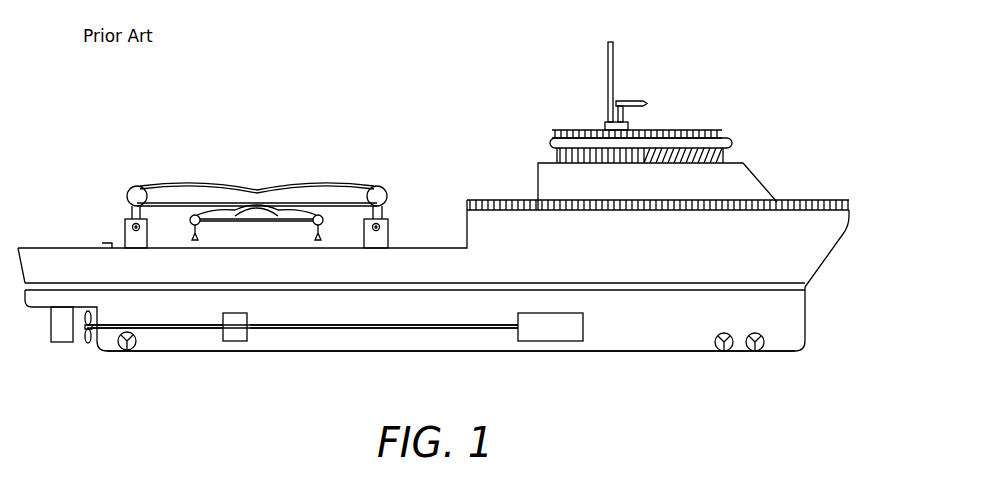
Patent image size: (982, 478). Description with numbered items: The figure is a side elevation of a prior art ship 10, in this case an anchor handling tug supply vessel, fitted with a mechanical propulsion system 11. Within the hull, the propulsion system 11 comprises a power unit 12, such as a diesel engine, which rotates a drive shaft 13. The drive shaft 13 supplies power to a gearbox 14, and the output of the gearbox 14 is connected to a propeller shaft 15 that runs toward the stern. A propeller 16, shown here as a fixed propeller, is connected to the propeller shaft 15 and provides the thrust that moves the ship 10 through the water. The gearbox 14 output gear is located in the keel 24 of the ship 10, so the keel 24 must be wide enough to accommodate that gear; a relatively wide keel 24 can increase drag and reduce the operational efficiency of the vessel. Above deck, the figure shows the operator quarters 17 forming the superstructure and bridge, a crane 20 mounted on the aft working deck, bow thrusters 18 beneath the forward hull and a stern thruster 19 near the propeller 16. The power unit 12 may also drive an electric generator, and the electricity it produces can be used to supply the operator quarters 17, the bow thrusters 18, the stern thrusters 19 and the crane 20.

The ship 10 is at (412, 126).
The mechanical propulsion system 11 is at (358, 330).
The power unit 12 is at (548, 342).
The drive shaft 13 is at (423, 329).
The gearbox 14 is at (233, 342).
The propeller shaft 15 is at (182, 329).
The propeller 16 is at (87, 340).
The operator quarters 17 is at (727, 140).
The bow thrusters 18 is at (715, 347).
The stern thrusters 19 is at (116, 350).
The crane 20 is at (255, 188).
The keel 24 is at (267, 351).